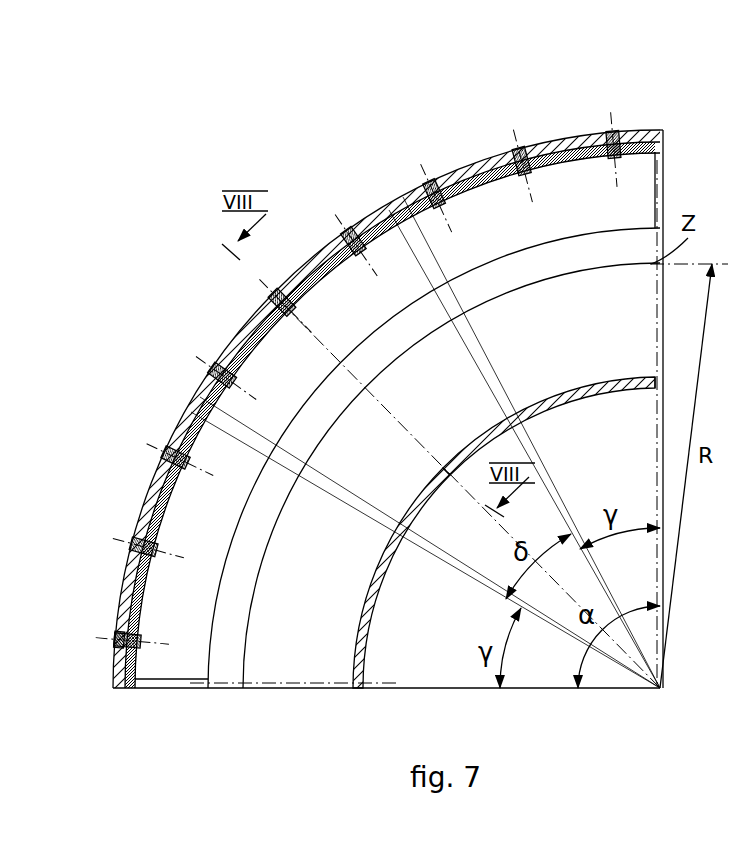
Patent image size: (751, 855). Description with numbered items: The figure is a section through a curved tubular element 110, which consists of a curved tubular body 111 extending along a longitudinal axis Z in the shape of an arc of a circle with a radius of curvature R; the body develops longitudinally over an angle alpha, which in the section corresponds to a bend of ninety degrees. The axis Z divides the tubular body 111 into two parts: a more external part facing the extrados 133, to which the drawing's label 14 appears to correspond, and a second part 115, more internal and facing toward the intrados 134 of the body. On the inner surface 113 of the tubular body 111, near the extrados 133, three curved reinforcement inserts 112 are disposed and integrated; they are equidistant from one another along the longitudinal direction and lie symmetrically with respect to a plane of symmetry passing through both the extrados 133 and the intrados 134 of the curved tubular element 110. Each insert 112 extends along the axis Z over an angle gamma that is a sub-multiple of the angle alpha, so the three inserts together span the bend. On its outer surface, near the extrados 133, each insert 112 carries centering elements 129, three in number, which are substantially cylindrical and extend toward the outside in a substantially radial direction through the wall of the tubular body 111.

The curved tubular element 110 is at (351, 172).
The curved tubular body 111 is at (651, 127).
The reinforcement inserts 112 is at (512, 164).
The inner surface 113 is at (352, 673).
The second part 115 is at (620, 385).
The centering elements 129 is at (612, 140).
The extrados 133 is at (118, 636).
The intrados 134 is at (382, 577).
The outer jacket pipe 14 is at (192, 408).